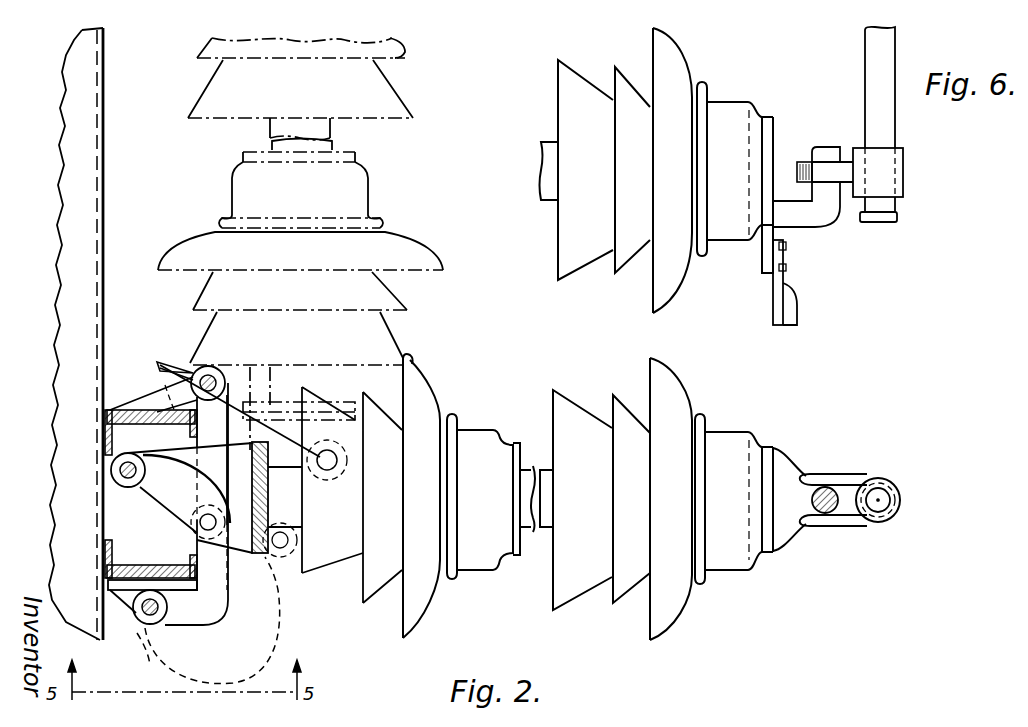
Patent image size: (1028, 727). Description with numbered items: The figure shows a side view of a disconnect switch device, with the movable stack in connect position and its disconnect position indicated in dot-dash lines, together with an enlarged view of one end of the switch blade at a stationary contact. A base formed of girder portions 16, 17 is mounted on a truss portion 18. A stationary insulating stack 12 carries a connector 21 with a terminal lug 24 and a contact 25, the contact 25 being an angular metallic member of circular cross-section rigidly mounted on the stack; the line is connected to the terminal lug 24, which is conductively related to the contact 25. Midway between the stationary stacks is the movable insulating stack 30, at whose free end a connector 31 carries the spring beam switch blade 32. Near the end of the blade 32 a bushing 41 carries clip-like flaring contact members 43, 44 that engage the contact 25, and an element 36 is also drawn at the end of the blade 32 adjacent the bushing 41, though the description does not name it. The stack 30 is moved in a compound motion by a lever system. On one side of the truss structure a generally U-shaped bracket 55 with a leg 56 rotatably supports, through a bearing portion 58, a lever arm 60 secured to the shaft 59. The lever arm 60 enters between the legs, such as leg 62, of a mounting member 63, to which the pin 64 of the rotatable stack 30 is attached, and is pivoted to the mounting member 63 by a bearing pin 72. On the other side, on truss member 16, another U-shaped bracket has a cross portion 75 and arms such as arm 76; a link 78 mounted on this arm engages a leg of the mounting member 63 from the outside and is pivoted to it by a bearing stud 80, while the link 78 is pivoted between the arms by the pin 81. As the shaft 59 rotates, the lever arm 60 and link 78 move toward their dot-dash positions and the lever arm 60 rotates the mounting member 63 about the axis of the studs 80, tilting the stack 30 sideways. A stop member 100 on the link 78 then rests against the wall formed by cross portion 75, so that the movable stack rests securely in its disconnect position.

In FIG. 2, the truss portion 18 is at (66, 164).
In FIG. 2, the movable insulating stack 30 is at (372, 178).
In FIG. 6, the stationary insulating stack 12 is at (622, 267).
In FIG. 6, the connector 21 is at (765, 262).
In FIG. 6, the terminal lug 24 is at (797, 306).
In FIG. 2, the contact 25 is at (823, 512).
In FIG. 6, the contact 25 is at (818, 222).
In FIG. 2, the connector 31 is at (780, 470).
In FIG. 2, the switch blade 32 is at (882, 515).
In FIG. 6, the switch blade 32 is at (872, 62).
In FIG. 2, the washer 36 is at (893, 497).
In FIG. 6, the washer 36 is at (888, 222).
In FIG. 2, the bushing 41 is at (882, 479).
In FIG. 6, the bushing 41 is at (900, 173).
In FIG. 2, the contact member 43 is at (832, 488).
In FIG. 6, the contact member 43 is at (815, 167).
In FIG. 2, the contact member 44 is at (840, 518).
In FIG. 2, the stop member 100 is at (158, 364).
In FIG. 2, the pin 81 is at (208, 382).
In FIG. 2, the link 78 is at (257, 408).
In FIG. 2, the pin 64 is at (313, 384).
In FIG. 2, the mounting member 63 is at (362, 396).
In FIG. 2, the cross portion 75 is at (125, 412).
In FIG. 2, the arm 76 is at (157, 403).
In FIG. 2, the girder portion 16 is at (107, 438).
In FIG. 2, the bearing pin 72 is at (128, 481).
In FIG. 2, the leg 62 is at (167, 507).
In FIG. 2, the girder portion 17 is at (137, 566).
In FIG. 2, the bearing stud 80 is at (200, 528).
In FIG. 2, the U-shaped bracket 55 is at (110, 584).
In FIG. 2, the leg 56 is at (143, 616).
In FIG. 2, the bearing portion 58 is at (147, 622).
In FIG. 2, the shaft 59 is at (163, 608).
In FIG. 2, the lever arm 60 is at (213, 618).